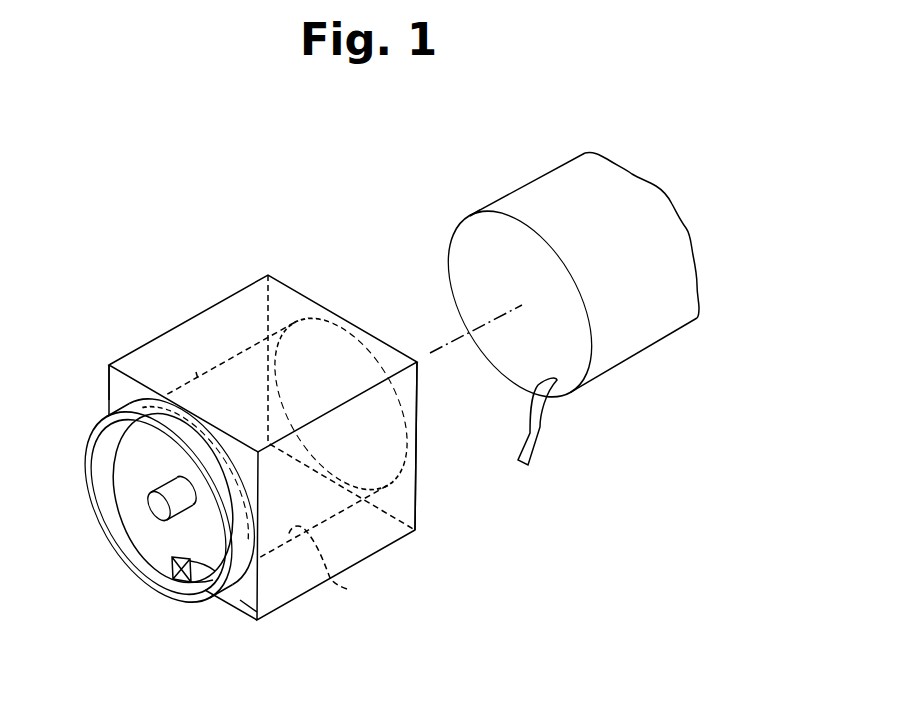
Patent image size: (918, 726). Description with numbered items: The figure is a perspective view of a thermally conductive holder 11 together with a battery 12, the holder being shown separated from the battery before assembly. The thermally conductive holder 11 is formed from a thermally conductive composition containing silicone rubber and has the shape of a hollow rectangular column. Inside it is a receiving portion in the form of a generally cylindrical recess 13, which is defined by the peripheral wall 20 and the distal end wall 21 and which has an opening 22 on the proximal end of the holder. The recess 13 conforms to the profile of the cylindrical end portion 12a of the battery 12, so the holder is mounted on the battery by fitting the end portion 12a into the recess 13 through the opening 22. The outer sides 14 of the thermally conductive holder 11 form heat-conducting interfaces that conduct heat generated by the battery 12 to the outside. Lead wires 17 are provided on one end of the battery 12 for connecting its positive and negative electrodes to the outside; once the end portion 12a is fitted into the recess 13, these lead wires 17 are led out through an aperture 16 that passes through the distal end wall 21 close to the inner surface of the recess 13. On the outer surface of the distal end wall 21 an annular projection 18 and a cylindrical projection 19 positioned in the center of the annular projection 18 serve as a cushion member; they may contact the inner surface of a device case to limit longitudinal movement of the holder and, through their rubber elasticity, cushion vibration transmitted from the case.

The thermally conductive holder 11 is at (218, 302).
The battery 12 is at (660, 380).
The end portion 12a is at (508, 198).
The recess 13 is at (347, 589).
The outer sides 14 is at (410, 508).
The aperture 16 is at (178, 583).
The lead wires 17 is at (544, 428).
The annular projection 18 is at (86, 467).
The cylindrical projection 19 is at (150, 510).
The peripheral wall 20 is at (198, 379).
The distal end wall 21 is at (246, 592).
The opening 22 is at (345, 321).